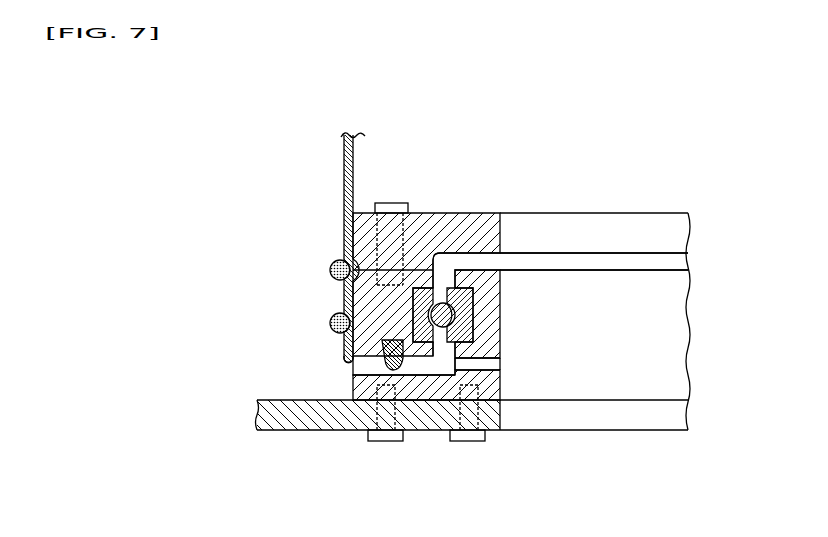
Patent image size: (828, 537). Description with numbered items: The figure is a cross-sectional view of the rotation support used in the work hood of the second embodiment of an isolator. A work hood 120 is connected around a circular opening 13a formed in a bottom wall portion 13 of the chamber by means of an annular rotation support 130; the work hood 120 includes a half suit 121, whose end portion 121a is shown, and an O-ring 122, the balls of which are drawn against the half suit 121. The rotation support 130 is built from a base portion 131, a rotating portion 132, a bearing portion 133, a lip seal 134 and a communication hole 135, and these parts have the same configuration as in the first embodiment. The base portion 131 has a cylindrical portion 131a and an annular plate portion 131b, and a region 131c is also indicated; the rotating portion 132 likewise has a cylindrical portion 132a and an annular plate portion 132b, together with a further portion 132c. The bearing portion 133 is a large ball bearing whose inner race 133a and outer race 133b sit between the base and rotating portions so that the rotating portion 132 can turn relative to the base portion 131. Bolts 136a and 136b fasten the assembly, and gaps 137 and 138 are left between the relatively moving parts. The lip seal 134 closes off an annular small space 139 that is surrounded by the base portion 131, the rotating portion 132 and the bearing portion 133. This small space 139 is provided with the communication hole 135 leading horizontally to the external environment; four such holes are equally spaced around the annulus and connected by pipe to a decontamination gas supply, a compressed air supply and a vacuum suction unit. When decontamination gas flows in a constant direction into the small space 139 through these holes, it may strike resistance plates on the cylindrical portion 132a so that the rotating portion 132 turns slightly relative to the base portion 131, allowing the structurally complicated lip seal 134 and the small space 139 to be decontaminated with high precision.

The bottom wall portion 13 is at (277, 400).
The opening 13a is at (562, 455).
The work hood 120 is at (268, 228).
The half suit 121 is at (343, 191).
The plate end portion 121a is at (342, 354).
The O-ring 122 is at (328, 315).
The rotation support 130 is at (498, 133).
The base portion 131 is at (446, 398).
The cylindrical portion 131a is at (456, 316).
The annular plate portion 131b is at (373, 367).
The ball receiving space 131c is at (352, 373).
The rotating portion 132 is at (487, 332).
The cylindrical portion 132a is at (378, 270).
The annular plate portion 132b is at (460, 228).
The lower housing portion 132c is at (416, 362).
The bearing portion 133 is at (509, 315).
The inner race 133a is at (475, 300).
The outer race 133b is at (475, 333).
The lip seal 134 is at (383, 352).
The communication hole 135 is at (510, 365).
The lower mounting pad 136a is at (385, 441).
The upper mounting pad 136b is at (410, 191).
The gap 137 is at (502, 262).
The gap 138 is at (338, 374).
The small space 139 is at (438, 363).